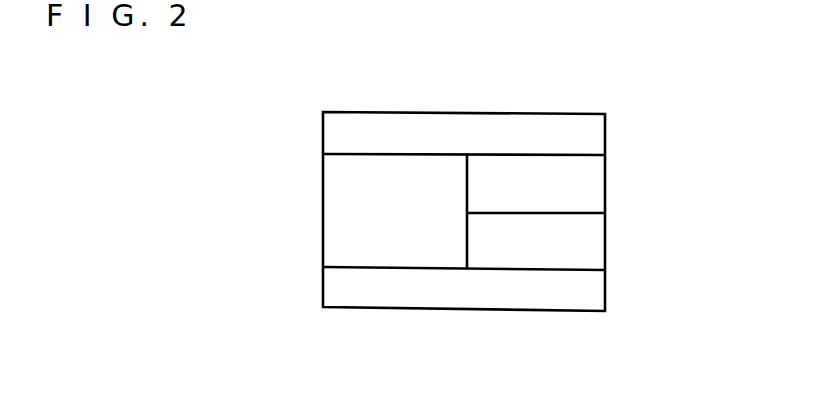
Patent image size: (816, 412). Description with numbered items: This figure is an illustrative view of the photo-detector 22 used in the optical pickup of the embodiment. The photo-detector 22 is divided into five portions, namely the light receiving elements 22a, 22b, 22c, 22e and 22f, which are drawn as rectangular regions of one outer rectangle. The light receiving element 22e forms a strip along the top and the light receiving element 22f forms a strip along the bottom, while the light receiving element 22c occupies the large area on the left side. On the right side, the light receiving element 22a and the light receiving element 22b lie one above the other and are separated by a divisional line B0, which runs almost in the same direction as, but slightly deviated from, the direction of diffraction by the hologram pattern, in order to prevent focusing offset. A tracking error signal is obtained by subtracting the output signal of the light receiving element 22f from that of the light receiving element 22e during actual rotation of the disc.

The photo-detector 22 is at (314, 122).
The light receiving element 22e is at (479, 120).
The light receiving element 22c is at (328, 178).
The divisional line B0 is at (549, 212).
The light receiving element 22a is at (592, 198).
The light receiving element 22b is at (592, 255).
The light receiving element 22f is at (460, 296).